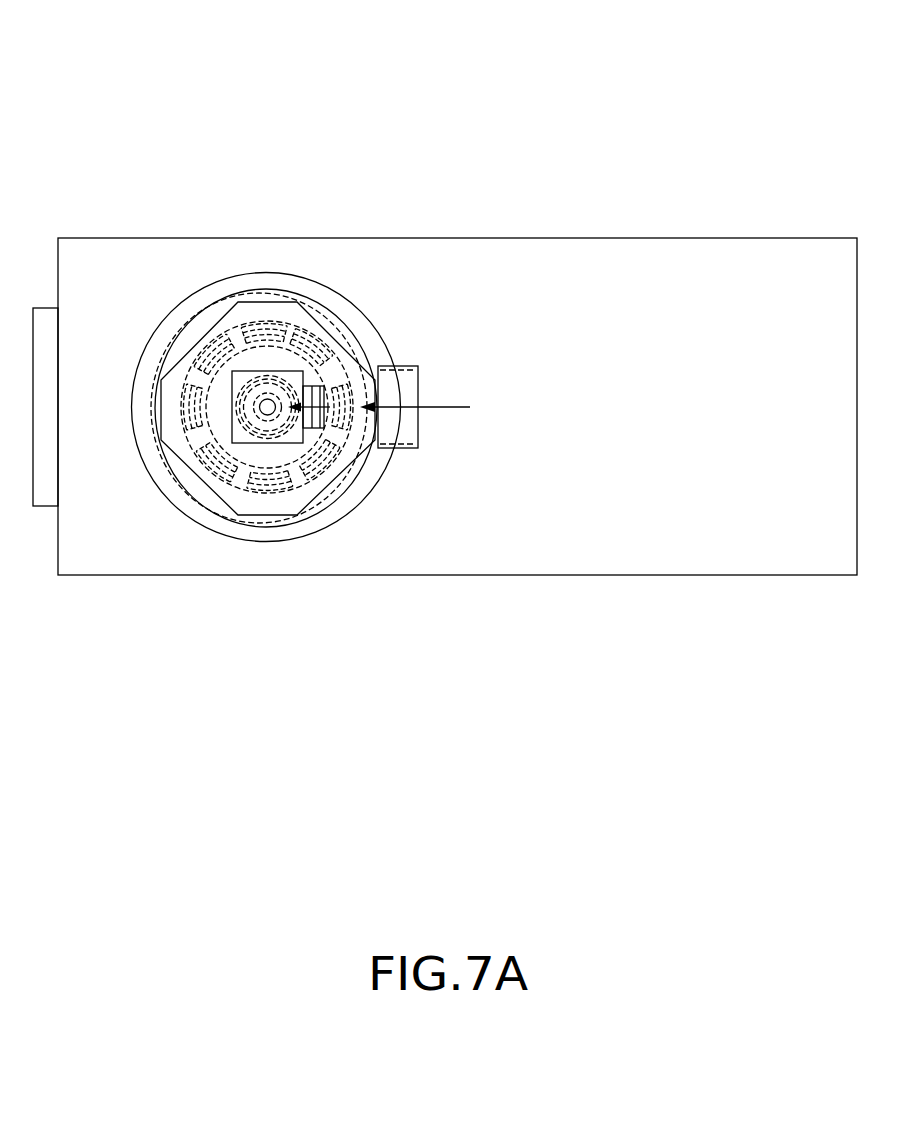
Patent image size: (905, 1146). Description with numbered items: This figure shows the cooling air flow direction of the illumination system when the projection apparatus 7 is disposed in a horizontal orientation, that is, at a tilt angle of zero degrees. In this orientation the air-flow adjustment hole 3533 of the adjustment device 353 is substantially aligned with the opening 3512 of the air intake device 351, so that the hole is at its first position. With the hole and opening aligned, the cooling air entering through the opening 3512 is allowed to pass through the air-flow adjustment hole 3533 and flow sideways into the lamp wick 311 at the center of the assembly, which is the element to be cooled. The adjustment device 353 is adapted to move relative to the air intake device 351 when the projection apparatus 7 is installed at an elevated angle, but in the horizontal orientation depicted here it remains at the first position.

The projection apparatus 7 is at (488, 71).
The lamp wick 311 is at (254, 405).
The air intake device 351 is at (358, 487).
The adjustment device 353 is at (195, 455).
The air-flow adjustment hole 3533 is at (315, 381).
The opening 3512 is at (404, 392).